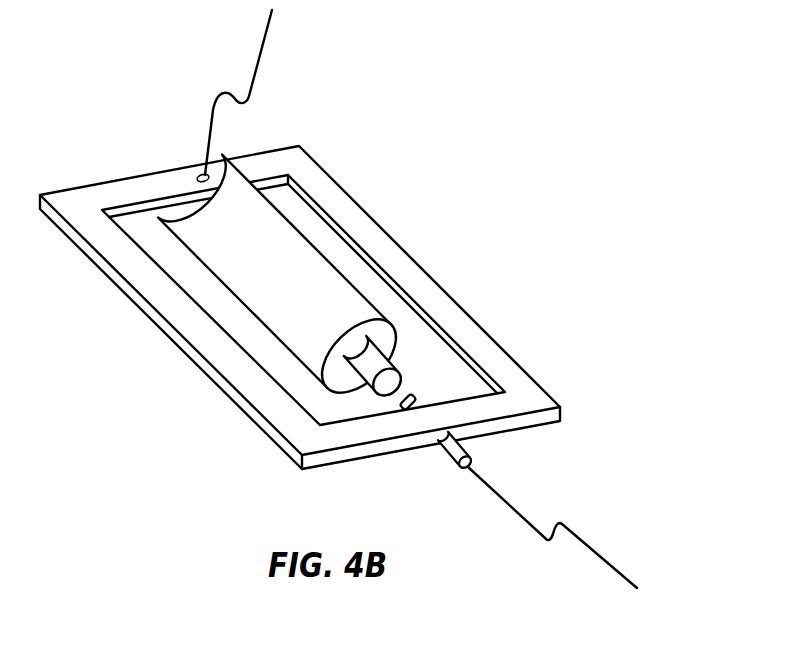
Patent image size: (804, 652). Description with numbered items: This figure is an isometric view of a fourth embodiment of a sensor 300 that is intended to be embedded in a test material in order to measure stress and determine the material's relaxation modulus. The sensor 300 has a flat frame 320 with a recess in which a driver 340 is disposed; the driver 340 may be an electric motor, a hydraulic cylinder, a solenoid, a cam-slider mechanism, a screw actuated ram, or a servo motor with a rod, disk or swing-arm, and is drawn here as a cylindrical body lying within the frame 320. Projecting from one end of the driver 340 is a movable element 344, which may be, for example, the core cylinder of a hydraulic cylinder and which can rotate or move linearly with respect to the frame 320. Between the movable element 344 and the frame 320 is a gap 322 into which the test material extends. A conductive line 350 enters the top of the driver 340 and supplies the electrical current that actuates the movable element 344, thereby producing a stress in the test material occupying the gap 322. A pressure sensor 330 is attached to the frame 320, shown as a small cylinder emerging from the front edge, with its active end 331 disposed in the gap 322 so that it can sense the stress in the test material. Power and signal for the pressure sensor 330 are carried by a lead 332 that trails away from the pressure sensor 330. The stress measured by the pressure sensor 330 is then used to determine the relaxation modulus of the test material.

The sensor 300 is at (339, 299).
The frame 320 is at (319, 307).
The gap 322 is at (401, 380).
The pressure sensor 330 is at (464, 445).
The active end 331 is at (421, 395).
The lead 332 is at (505, 502).
The driver 340 is at (318, 267).
The movable element 344 is at (368, 353).
The conductive line 350 is at (263, 50).